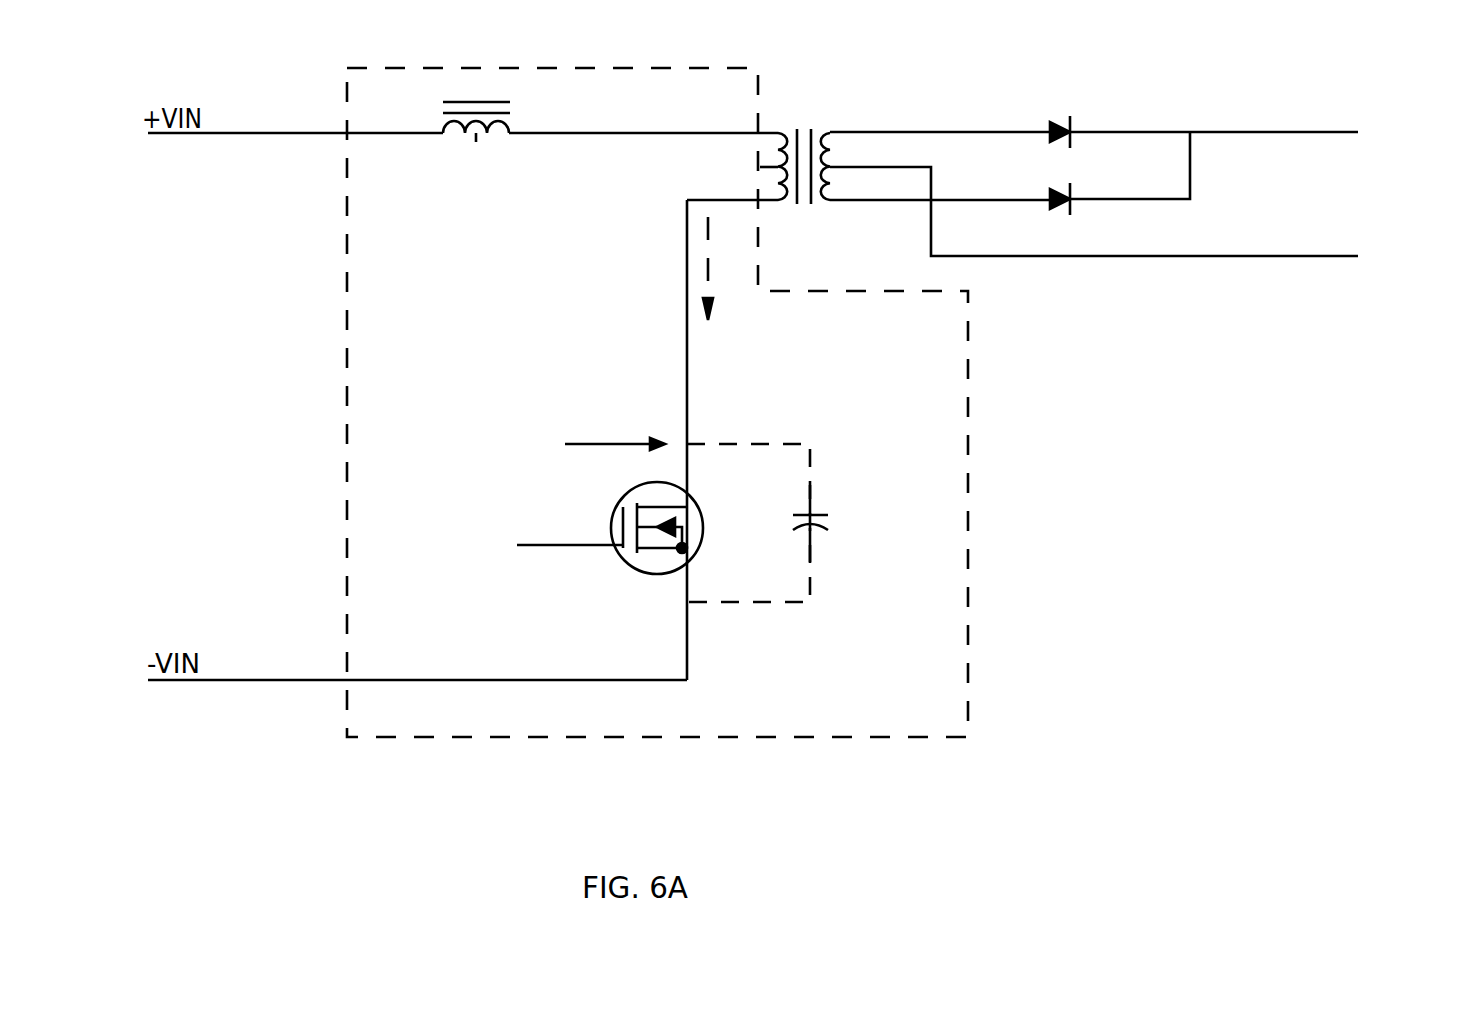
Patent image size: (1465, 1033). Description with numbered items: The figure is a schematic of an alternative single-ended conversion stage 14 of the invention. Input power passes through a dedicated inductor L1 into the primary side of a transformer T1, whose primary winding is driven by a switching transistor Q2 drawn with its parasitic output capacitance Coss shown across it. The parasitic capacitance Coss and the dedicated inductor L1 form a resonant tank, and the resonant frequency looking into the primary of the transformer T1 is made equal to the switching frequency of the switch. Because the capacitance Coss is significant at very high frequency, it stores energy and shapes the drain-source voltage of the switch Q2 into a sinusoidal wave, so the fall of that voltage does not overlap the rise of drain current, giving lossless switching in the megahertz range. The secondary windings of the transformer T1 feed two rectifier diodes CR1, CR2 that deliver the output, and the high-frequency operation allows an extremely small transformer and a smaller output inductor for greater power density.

The power converter circuit 14 is at (611, 68).
The dedicated inductor L1 is at (476, 107).
The transformer T1 is at (810, 151).
The switching transistor Q2 is at (610, 520).
The rectifier diode CR1 is at (1056, 113).
The rectifier diode CR2 is at (1056, 182).
The parasitic capacitance Coss is at (794, 523).